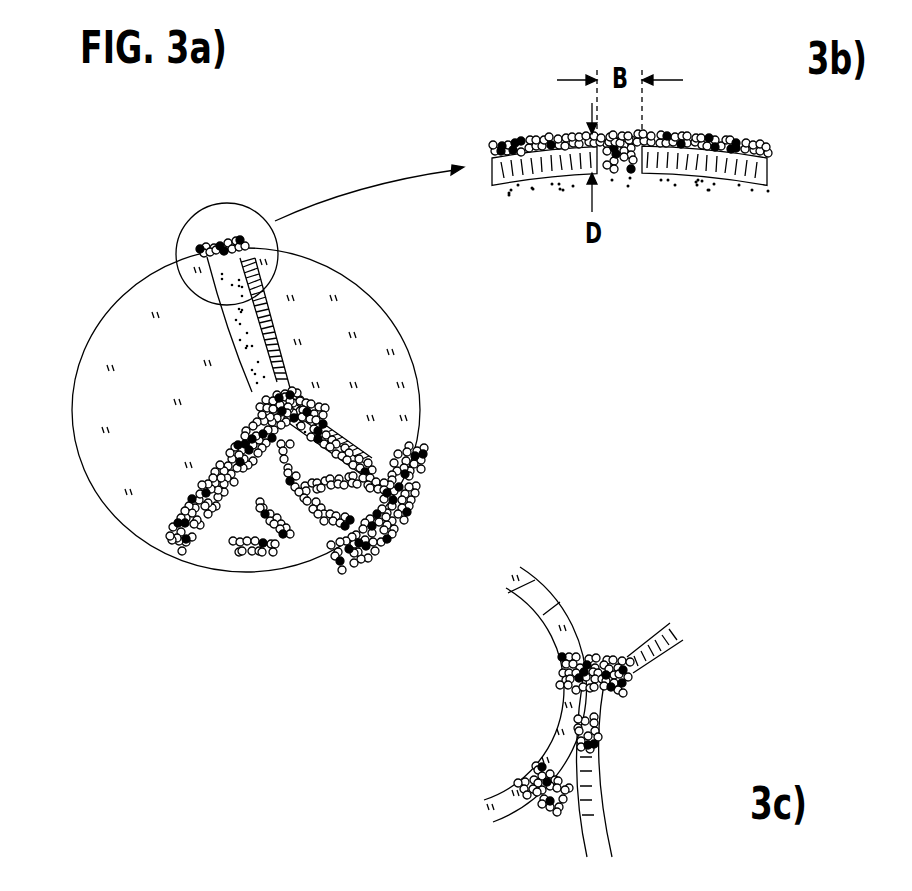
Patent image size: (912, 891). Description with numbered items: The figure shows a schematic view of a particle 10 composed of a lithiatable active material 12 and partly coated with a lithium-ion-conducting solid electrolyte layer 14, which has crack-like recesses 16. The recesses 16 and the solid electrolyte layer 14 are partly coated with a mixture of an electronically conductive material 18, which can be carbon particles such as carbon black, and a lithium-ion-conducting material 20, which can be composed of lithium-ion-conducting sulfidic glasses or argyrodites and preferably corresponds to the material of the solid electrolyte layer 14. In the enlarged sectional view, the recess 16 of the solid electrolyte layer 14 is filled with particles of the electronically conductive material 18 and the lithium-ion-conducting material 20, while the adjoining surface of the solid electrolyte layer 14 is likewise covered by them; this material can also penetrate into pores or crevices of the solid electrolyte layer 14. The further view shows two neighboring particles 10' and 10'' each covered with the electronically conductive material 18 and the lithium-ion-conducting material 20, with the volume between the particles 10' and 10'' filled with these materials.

In FIG. 3a, the particle 10 is at (224, 351).
In FIG. 3c, the neighboring particle 10' is at (520, 694).
In FIG. 3c, the neighboring particle 10'' is at (630, 740).
In FIG. 3b, the lithiatable active material 12 is at (623, 188).
In FIG. 3a, the solid electrolyte layer 14 is at (113, 340).
In FIG. 3b, the solid electrolyte layer 14 is at (528, 172).
In FIG. 3c, the solid electrolyte layer 14 is at (570, 640).
In FIG. 3b, the recess 16 is at (626, 121).
In FIG. 3a, the electronically conductive material 18 is at (175, 557).
In FIG. 3b, the electronically conductive material 18 is at (530, 137).
In FIG. 3c, the electronically conductive material 18 is at (637, 680).
In FIG. 3a, the lithium-ion-conducting material 20 is at (290, 398).
In FIG. 3b, the lithium-ion-conducting material 20 is at (677, 137).
In FIG. 3c, the lithium-ion-conducting material 20 is at (603, 737).